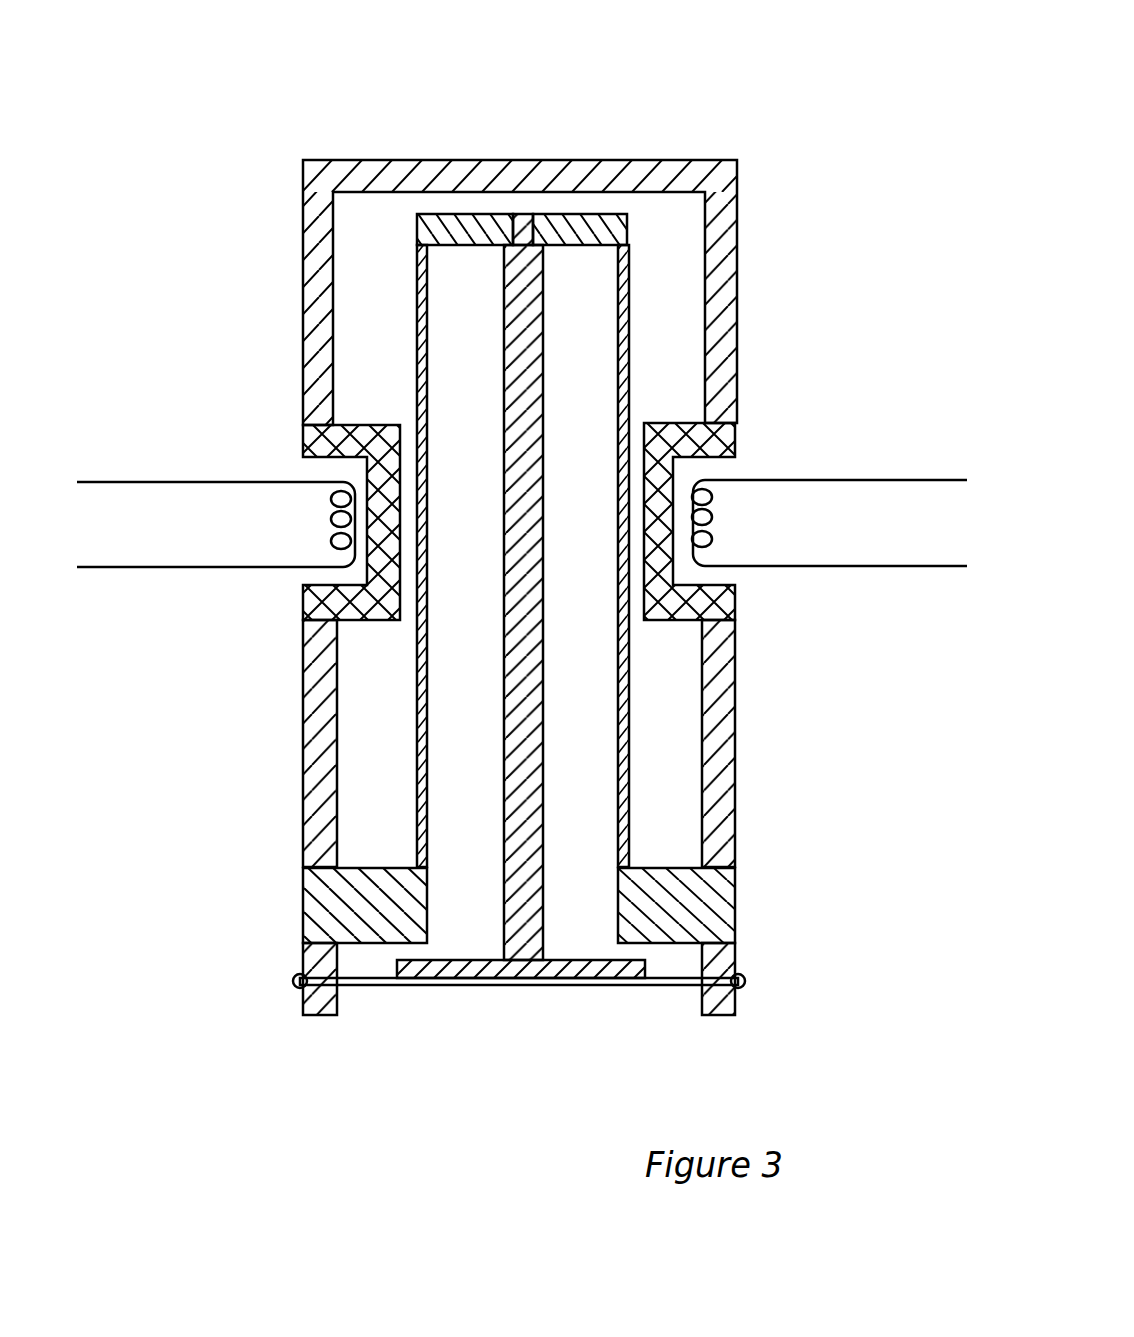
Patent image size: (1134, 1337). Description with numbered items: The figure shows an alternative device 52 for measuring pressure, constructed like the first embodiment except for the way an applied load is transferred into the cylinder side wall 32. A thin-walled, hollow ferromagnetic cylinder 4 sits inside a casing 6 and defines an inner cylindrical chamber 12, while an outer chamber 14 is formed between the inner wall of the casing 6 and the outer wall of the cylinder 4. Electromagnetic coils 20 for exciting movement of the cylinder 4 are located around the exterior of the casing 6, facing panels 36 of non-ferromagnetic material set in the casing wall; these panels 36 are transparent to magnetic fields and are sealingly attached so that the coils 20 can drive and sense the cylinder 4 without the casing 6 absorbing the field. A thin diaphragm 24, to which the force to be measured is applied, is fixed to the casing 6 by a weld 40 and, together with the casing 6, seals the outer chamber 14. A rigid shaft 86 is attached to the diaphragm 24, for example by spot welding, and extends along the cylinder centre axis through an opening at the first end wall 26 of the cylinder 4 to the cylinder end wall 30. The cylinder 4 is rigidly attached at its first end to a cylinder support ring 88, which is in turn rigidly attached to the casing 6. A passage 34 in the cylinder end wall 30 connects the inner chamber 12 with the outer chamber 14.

The ferromagnetic cylinder 4 is at (420, 685).
The casing 6 is at (724, 828).
The inner cylindrical chamber 12 is at (602, 325).
The outer chamber 14 is at (360, 288).
The electromagnetic coils 20 is at (193, 470).
The diaphragm 24 is at (682, 987).
The first end wall 26 is at (478, 915).
The cylinder end wall 30 is at (443, 222).
The cylinder side wall 32 is at (630, 673).
The passage 34 is at (587, 218).
The panels 36 is at (733, 433).
The weld 40 is at (300, 982).
The device 52 is at (250, 1073).
The rigid shaft 86 is at (540, 763).
The cylinder support ring 88 is at (307, 898).